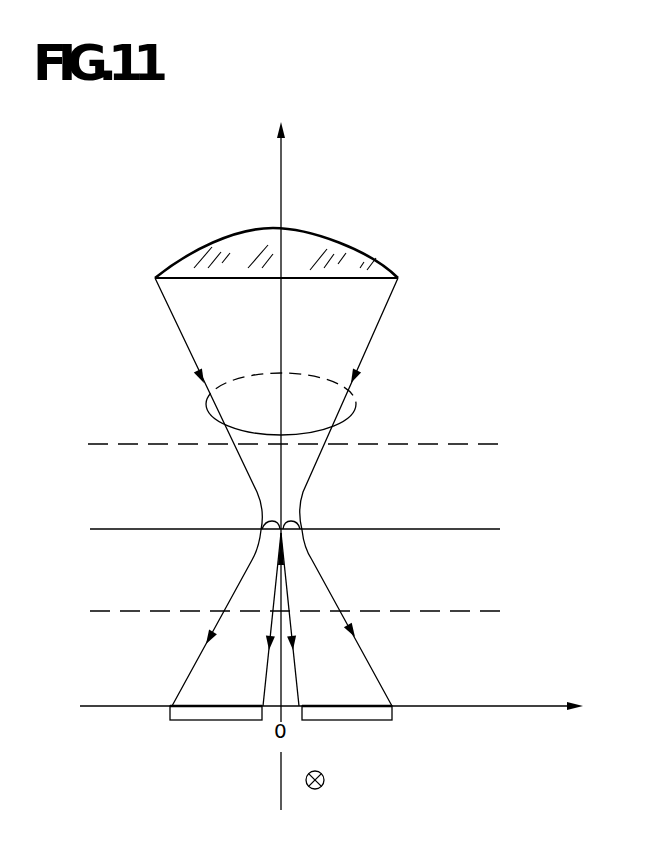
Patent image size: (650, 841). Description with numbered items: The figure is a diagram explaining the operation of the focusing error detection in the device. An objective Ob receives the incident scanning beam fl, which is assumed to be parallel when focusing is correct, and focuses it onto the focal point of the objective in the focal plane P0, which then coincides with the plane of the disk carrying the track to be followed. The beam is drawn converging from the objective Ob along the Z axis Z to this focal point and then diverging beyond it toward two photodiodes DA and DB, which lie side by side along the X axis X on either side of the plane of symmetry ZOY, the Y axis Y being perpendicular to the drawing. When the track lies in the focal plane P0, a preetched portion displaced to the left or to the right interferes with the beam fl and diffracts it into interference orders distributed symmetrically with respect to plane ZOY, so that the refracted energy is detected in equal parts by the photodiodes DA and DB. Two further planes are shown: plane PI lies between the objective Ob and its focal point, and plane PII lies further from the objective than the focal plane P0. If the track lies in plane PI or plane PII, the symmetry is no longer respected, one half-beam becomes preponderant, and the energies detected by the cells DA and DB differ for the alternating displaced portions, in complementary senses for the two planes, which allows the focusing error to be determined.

The objective Ob is at (372, 262).
The incident scanning beam fl is at (356, 410).
The plane P_I PI is at (295, 427).
The focal plane P_0 P0 is at (295, 509).
The plane P_II PII is at (296, 591).
The photodiode D_A DA is at (213, 716).
The photodiode D_B DB is at (361, 716).
The X axis X is at (331, 691).
The Y axis Y is at (323, 786).
The Z axis Z is at (290, 466).